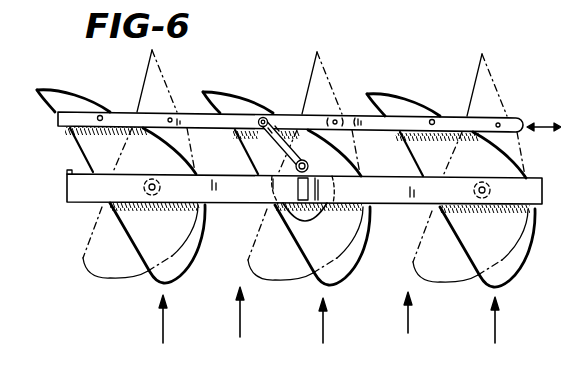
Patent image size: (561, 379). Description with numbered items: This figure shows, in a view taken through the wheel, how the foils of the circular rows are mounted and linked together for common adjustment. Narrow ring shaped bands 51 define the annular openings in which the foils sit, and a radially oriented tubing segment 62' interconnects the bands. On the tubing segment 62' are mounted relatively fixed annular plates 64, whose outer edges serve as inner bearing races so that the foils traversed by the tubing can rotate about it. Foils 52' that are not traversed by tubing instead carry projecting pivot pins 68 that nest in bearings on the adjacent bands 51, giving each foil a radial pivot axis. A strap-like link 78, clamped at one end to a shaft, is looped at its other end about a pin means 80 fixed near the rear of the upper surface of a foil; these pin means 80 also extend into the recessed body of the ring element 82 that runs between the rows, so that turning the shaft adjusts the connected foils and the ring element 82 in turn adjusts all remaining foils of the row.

The ring shaped band 51 is at (392, 203).
The foil 52' is at (242, 86).
The tubing segment 62' is at (278, 207).
The annular plate 64 is at (305, 222).
The pivot pin 68 is at (152, 179).
The strap-like link 78 is at (287, 116).
The pin means 80 is at (102, 115).
The ring element 82 is at (359, 116).